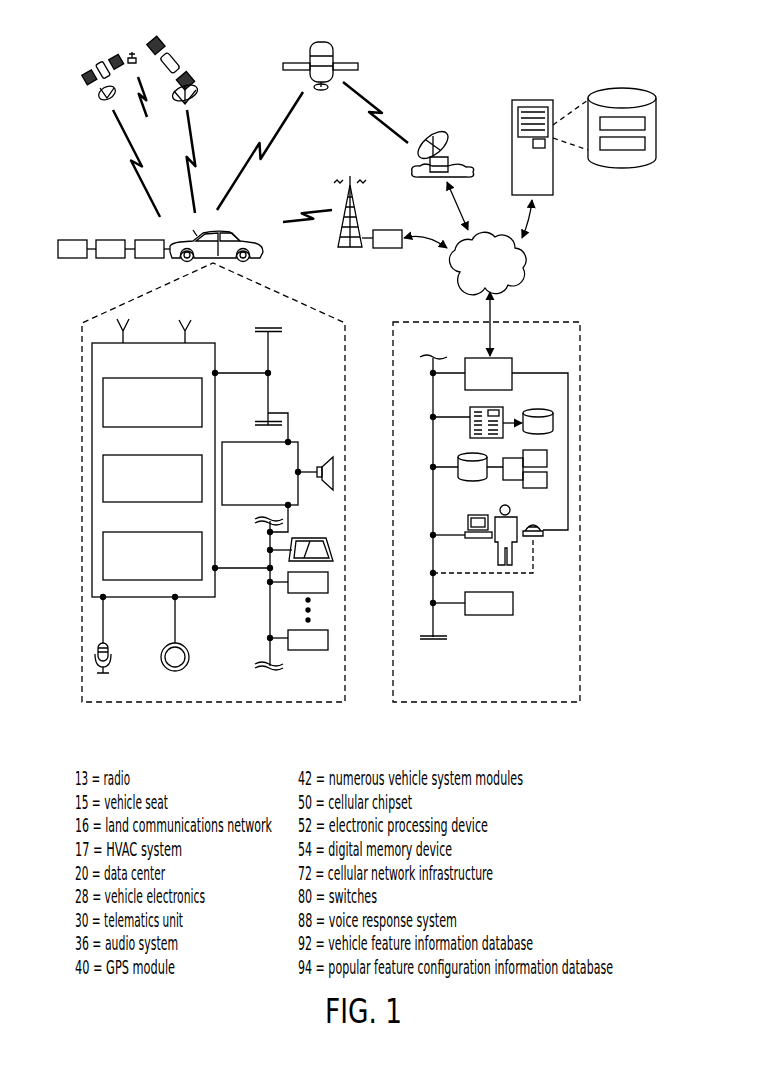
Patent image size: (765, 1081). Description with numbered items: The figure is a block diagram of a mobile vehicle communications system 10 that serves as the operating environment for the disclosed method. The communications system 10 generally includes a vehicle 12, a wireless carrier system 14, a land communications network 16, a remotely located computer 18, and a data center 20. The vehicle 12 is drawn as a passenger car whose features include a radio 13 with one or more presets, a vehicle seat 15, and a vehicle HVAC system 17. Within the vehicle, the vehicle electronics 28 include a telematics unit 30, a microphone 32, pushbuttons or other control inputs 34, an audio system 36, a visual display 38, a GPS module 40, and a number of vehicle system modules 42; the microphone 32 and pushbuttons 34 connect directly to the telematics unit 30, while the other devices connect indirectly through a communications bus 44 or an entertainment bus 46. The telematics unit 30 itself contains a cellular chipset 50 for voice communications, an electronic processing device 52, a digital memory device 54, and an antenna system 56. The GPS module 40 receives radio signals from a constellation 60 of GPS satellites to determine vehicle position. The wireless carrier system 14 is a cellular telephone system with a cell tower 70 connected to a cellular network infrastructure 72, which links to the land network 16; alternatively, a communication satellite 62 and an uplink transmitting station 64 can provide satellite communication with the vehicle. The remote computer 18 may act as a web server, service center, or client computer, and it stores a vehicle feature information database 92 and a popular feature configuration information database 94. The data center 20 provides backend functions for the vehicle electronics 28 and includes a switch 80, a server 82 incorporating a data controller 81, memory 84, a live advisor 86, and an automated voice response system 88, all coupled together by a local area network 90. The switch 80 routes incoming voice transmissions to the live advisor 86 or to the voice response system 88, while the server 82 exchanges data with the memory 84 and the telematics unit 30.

The mobile vehicle communications system 10 is at (480, 56).
The vehicle 12 is at (236, 240).
The radio 13 is at (150, 240).
The wireless carrier system 14 is at (343, 257).
The vehicle seat 15 is at (111, 240).
The land communications network 16 is at (527, 262).
The vehicle HVAC system 17 is at (73, 240).
The remote computer 18 is at (535, 100).
The data center 20 is at (485, 708).
The vehicle electronics 28 is at (200, 708).
The telematics unit 30 is at (190, 334).
The microphone 32 is at (95, 660).
The pushbuttons or other control inputs 34 is at (189, 656).
The audio system 36 is at (290, 440).
The visual display 38 is at (306, 538).
The GPS module 40 is at (328, 581).
The vehicle system modules 42 is at (328, 638).
The communications bus 44 is at (262, 657).
The entertainment bus 46 is at (272, 353).
The cellular chipset 50 is at (103, 402).
The electronic processing device 52 is at (103, 478).
The digital memory device 54 is at (103, 553).
The antenna system 56 is at (119, 341).
The constellation of GPS satellites 60 is at (212, 110).
The communication satellite 62 is at (333, 58).
The uplink transmitting station 64 is at (457, 163).
The cell tower 70 is at (355, 205).
The cellular network infrastructure 72 is at (396, 250).
The switch 80 is at (512, 366).
The data controller 81 is at (534, 410).
The server 82 is at (470, 416).
The memory 84 is at (468, 480).
The live advisor 86 is at (497, 555).
The automated voice response system 88 is at (513, 601).
The local area network 90 is at (437, 624).
The vehicle feature information database 92 is at (645, 124).
The popular feature configuration information database 94 is at (645, 143).